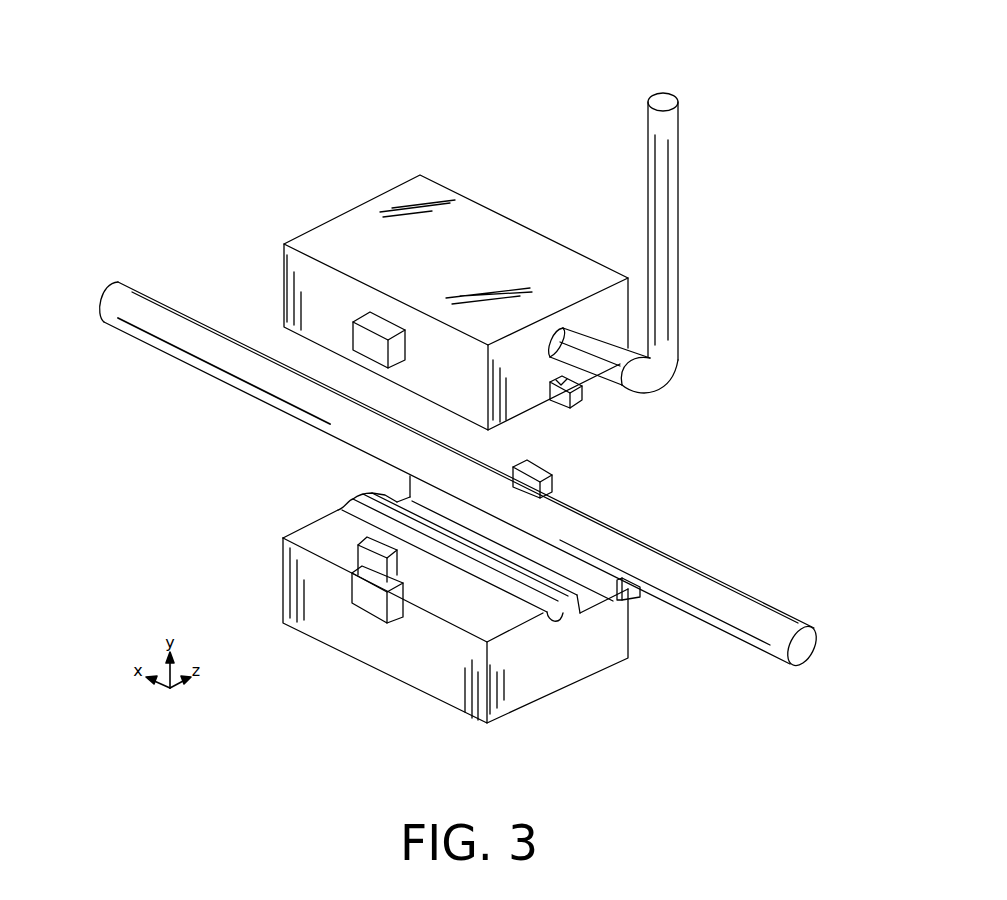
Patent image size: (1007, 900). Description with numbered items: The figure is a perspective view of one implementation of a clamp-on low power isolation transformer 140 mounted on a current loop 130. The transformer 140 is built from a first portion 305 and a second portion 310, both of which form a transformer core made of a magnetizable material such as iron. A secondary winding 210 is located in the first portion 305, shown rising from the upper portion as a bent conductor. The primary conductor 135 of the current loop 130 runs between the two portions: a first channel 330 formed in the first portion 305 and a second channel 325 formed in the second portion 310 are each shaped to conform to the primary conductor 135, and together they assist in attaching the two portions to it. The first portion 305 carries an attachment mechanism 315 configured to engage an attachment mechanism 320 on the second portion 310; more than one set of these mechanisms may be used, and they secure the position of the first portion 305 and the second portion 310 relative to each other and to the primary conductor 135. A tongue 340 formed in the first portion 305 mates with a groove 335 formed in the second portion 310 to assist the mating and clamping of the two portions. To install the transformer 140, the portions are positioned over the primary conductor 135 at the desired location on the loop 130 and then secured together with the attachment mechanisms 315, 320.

The current loop 130 is at (76, 276).
The primary conductor 135 is at (135, 330).
The clamp-on isolation transformer 140 is at (422, 80).
The secondary winding 210 is at (678, 203).
The first portion 305 is at (465, 215).
The second portion 310 is at (312, 618).
The attachment mechanism 315 is at (379, 318).
The attachment mechanism 320 is at (552, 490).
The second channel 325 is at (560, 620).
The first channel 330 is at (553, 402).
The groove 335 is at (593, 598).
The tongue 340 is at (602, 397).